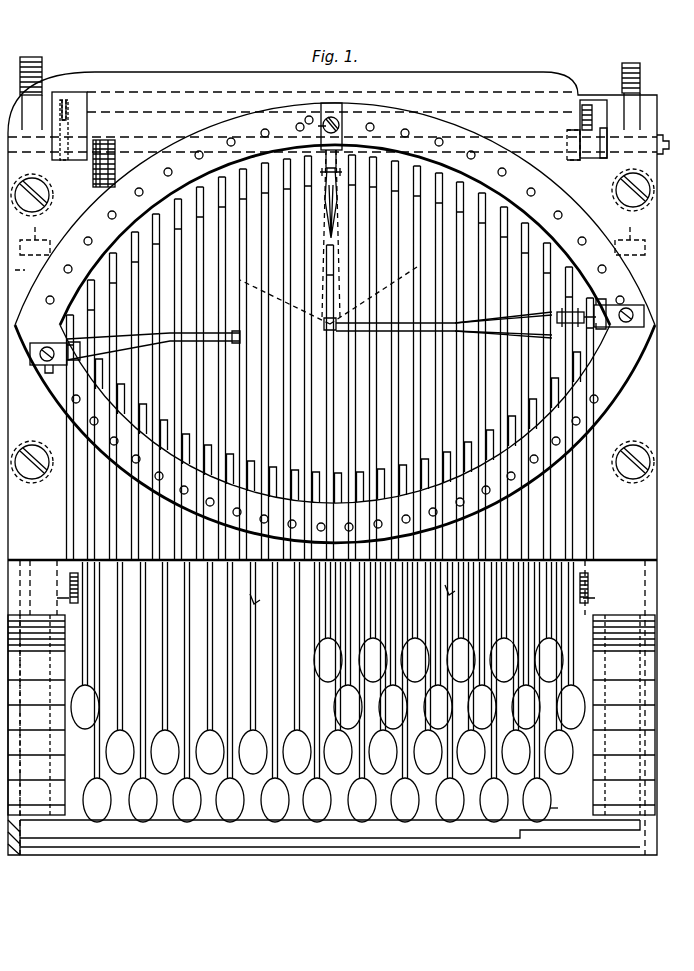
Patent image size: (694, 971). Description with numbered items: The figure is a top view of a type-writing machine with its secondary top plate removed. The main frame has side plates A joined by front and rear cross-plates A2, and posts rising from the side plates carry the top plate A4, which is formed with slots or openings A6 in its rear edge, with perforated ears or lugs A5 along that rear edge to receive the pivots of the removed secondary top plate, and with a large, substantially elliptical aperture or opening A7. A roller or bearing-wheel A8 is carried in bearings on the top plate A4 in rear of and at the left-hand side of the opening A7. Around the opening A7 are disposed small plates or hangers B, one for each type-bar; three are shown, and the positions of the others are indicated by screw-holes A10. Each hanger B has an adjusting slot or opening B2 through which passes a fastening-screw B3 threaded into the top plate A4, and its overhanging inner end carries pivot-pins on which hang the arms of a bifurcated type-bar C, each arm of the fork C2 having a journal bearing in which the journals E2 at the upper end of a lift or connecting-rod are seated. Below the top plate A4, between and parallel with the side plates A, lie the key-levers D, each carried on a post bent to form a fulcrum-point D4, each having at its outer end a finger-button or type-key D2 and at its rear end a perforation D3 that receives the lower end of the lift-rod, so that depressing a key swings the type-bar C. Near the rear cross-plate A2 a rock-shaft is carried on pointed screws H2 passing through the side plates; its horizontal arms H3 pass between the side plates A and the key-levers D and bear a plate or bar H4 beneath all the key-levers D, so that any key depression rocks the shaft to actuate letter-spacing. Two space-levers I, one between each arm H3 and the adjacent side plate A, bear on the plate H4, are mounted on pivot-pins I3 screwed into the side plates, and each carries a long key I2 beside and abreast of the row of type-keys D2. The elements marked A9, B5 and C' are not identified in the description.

The side plates A is at (332, 463).
The cross-plates A2 is at (72, 92).
The top plate A4 is at (332, 344).
The ears or lugs A5 is at (330, 85).
The slots or openings A6 is at (596, 105).
The aperture or opening A7 is at (335, 324).
The roller or bearing-wheel A8 is at (112, 163).
The pin A9 is at (75, 111).
The screw-holes A10 is at (335, 323).
The plate or hanger B is at (326, 360).
The adjusting slot or opening B2 is at (341, 133).
The fastening-screw B3 is at (619, 306).
The pin B5 is at (308, 117).
The type-bar C is at (309, 255).
The fork C2 is at (503, 307).
The fork arm C' is at (503, 338).
The lever D is at (330, 357).
The finger-button or type-key D2 is at (320, 706).
The perforation D3 is at (112, 284).
The fulcrum-point D4 is at (352, 598).
The journal E2 is at (575, 306).
The pointed screws H2 is at (671, 140).
The arms H3 is at (68, 578).
The plate or bar H4 is at (564, 797).
The space-lever I is at (326, 600).
The key I2 is at (331, 715).
The pivot-pins I3 is at (330, 247).